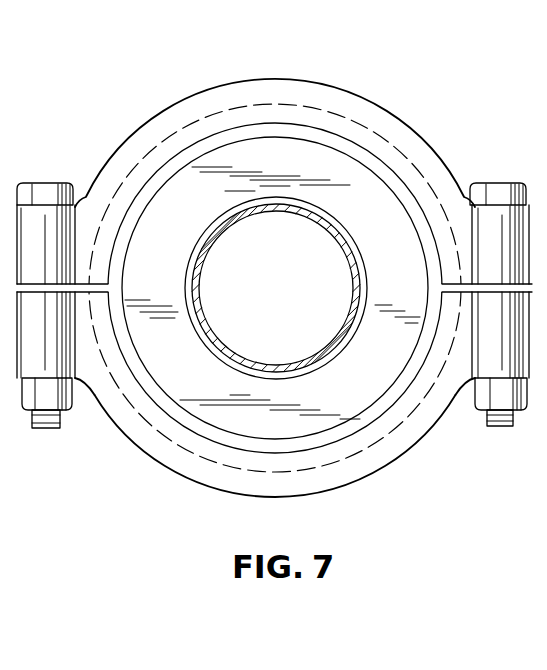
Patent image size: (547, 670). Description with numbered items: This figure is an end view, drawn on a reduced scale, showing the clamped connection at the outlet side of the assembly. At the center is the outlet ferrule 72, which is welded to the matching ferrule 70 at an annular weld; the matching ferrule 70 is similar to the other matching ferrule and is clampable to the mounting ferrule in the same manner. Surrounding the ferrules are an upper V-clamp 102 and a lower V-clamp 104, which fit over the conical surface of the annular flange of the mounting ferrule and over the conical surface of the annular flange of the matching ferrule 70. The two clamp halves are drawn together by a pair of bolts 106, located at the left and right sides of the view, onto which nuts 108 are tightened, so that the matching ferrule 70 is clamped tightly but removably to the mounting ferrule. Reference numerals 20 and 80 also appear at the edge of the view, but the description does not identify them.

The conduit 20 is at (0, 116).
The matching ferrule 70 is at (330, 137).
The outlet ferrule 72 is at (280, 203).
The fitting 80 is at (10, 49).
The upper V-clamp 102 is at (395, 117).
The lower V-clamp 104 is at (397, 450).
The bolts 106 is at (43, 196).
The nuts 108 is at (72, 405).